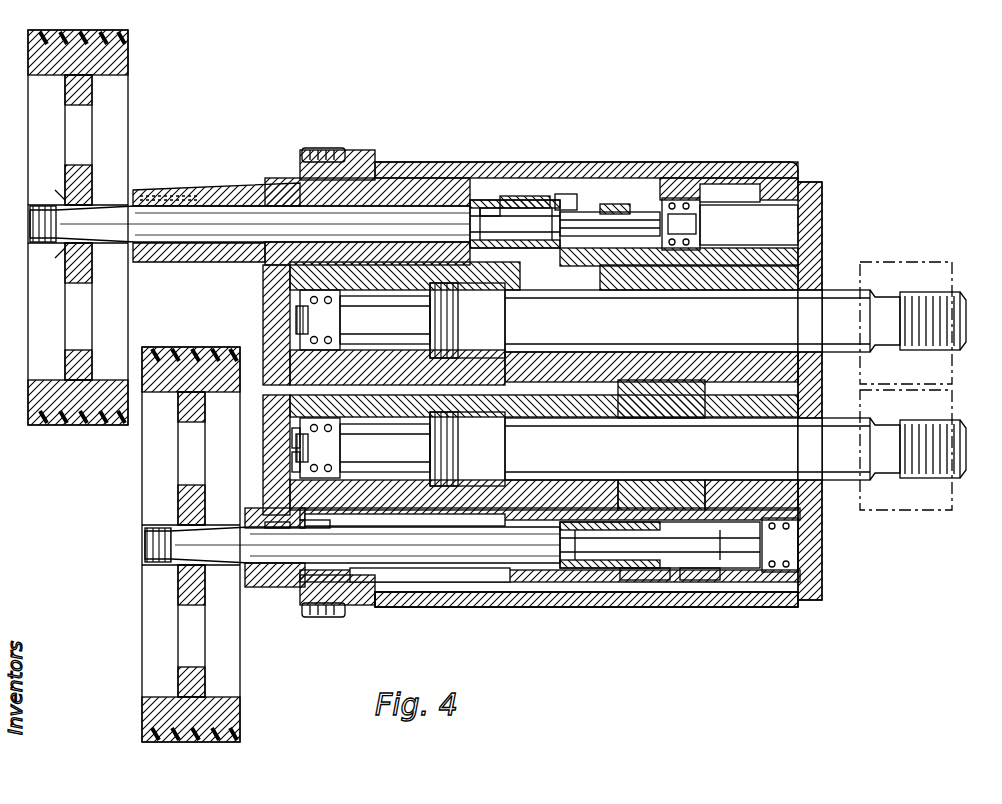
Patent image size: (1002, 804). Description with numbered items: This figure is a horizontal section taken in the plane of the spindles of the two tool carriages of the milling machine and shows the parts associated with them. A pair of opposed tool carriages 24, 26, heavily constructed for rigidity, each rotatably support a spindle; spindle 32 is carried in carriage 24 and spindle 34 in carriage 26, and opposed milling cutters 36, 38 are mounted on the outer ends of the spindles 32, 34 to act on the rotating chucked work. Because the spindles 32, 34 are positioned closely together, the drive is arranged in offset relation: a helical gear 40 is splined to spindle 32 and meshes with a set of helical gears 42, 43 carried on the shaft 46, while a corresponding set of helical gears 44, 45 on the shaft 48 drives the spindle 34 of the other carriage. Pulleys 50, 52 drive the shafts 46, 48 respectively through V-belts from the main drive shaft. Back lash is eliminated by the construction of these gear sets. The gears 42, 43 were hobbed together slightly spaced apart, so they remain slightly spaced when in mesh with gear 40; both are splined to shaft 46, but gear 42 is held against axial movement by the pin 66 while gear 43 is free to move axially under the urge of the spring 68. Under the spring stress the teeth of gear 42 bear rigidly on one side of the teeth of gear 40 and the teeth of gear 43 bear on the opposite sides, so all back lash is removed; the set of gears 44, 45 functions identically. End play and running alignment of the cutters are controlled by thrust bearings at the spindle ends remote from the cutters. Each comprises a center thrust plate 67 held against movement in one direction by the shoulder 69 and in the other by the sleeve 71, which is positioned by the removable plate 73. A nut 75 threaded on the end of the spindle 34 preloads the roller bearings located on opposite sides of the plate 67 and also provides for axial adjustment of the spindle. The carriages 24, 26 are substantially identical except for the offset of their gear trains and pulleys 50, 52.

The tool carriage 24 is at (690, 163).
The tool carriage 26 is at (466, 607).
The spindle 32 is at (698, 323).
The spindle 34 is at (758, 453).
The milling cutter 36 is at (905, 266).
The milling cutter 38 is at (958, 396).
The helical gear 40 is at (578, 288).
The helical gear 42 is at (520, 196).
The helical gear 43 is at (565, 194).
The helical gear 44 is at (642, 582).
The helical gear 45 is at (684, 582).
The shaft 46 is at (322, 224).
The shaft 48 is at (392, 546).
The pulley 50 is at (130, 58).
The pulley 52 is at (145, 716).
The pin 66 is at (498, 204).
The center thrust plate 67 is at (350, 438).
The spring 68 is at (615, 205).
The shoulder 69 is at (338, 528).
The sleeve 71 is at (292, 528).
The removable plate 73 is at (264, 434).
The nut 75 is at (264, 462).